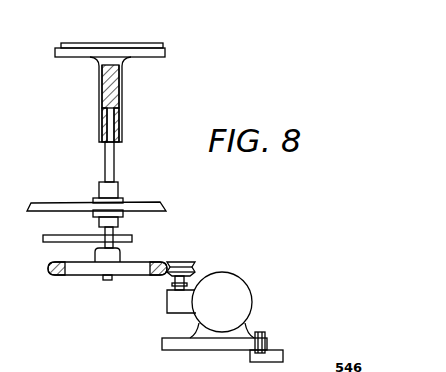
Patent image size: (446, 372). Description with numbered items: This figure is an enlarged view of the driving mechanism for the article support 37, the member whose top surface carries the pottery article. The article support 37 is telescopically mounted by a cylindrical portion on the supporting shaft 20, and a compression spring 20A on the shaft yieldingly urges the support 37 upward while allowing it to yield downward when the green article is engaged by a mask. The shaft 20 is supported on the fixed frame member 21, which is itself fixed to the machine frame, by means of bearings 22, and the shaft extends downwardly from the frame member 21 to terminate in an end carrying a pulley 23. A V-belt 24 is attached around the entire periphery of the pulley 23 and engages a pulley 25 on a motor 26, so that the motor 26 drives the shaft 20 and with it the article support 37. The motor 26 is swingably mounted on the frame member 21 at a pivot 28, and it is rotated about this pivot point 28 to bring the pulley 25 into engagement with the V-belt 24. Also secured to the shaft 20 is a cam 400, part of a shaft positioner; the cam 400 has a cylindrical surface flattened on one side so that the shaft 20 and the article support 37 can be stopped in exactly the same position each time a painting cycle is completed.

The article support 37 is at (166, 53).
The supporting shaft 20 is at (100, 148).
The compression spring 20A is at (118, 100).
The bearings 22 is at (110, 195).
The fixed frame member 21 is at (152, 203).
The cam 400 is at (43, 238).
The pulley 23 is at (120, 258).
The V-belt 24 is at (160, 275).
The pulley 25 is at (188, 265).
The motor 26 is at (238, 288).
The pivot 28 is at (268, 335).